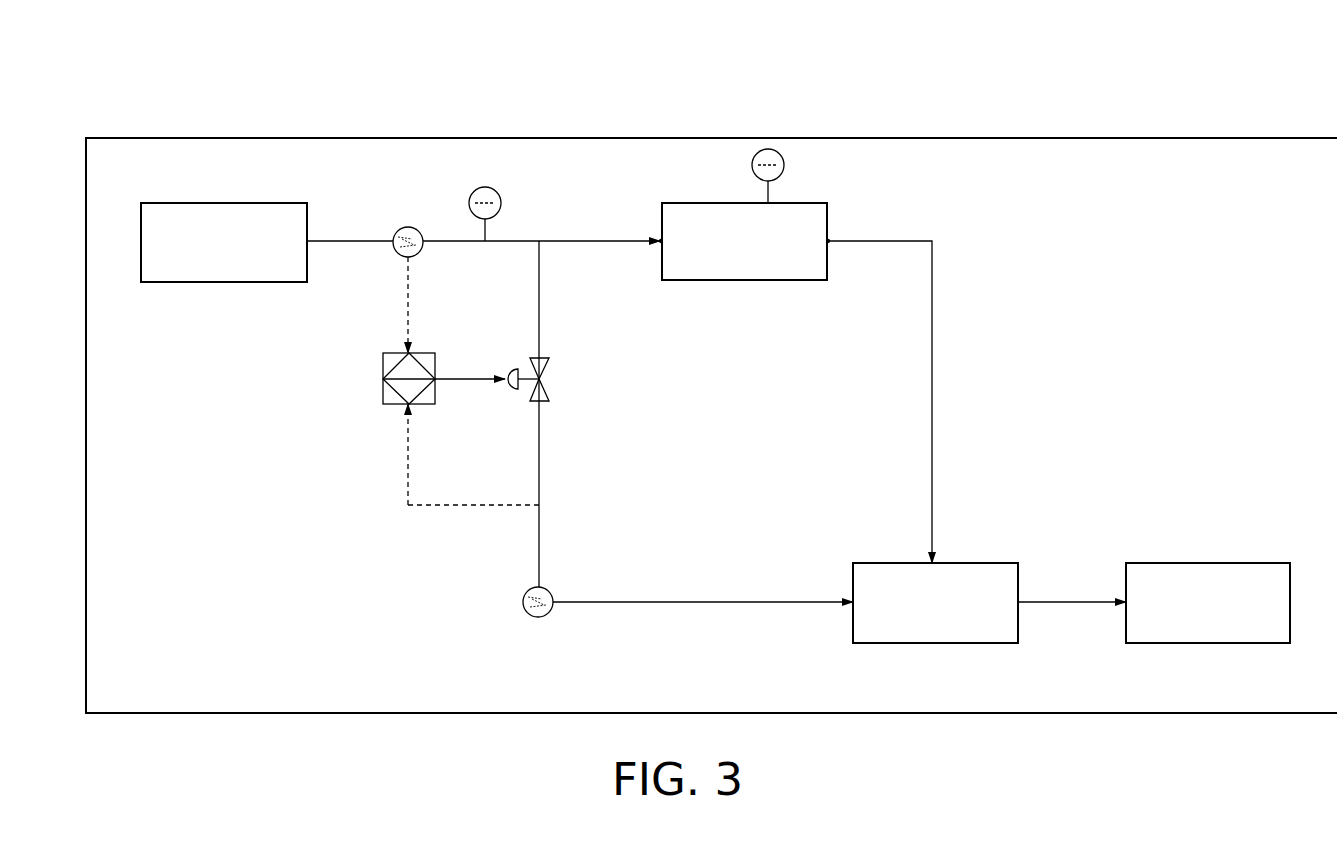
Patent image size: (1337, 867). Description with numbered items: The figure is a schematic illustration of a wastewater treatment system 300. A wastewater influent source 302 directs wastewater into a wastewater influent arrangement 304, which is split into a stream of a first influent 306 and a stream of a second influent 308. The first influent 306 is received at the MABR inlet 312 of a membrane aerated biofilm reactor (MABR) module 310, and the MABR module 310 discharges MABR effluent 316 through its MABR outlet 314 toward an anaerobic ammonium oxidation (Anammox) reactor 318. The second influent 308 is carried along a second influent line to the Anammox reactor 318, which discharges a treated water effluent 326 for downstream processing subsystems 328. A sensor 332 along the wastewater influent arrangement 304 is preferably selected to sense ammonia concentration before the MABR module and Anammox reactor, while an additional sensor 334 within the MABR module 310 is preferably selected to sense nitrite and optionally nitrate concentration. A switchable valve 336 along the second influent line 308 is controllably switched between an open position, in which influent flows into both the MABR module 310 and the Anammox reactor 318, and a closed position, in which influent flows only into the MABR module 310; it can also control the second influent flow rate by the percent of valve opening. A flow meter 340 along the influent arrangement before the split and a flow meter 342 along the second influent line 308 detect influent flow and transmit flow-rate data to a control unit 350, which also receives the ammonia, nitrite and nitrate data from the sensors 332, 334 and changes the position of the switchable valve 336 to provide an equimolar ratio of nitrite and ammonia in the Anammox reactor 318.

The wastewater treatment system 300 is at (372, 72).
The wastewater influent source 302 is at (223, 203).
The wastewater influent arrangement 304 is at (366, 213).
The first influent 306 is at (633, 213).
The second influent 308 is at (612, 606).
The membrane aerated biofilm reactor (MABR) module 310 is at (673, 203).
The MABR inlet 312 is at (662, 245).
The MABR outlet 314 is at (827, 241).
The MABR effluent 316 is at (932, 390).
The Anammox reactor 318 is at (887, 563).
The treated water effluent 326 is at (1088, 600).
The downstream processing subsystems 328 is at (1212, 563).
The sensor 332 is at (498, 195).
The additional sensor 334 is at (784, 163).
The switchable valve 336 is at (550, 370).
The flow meter 340 is at (410, 228).
The flow meter 342 is at (548, 590).
The control unit 350 is at (383, 368).